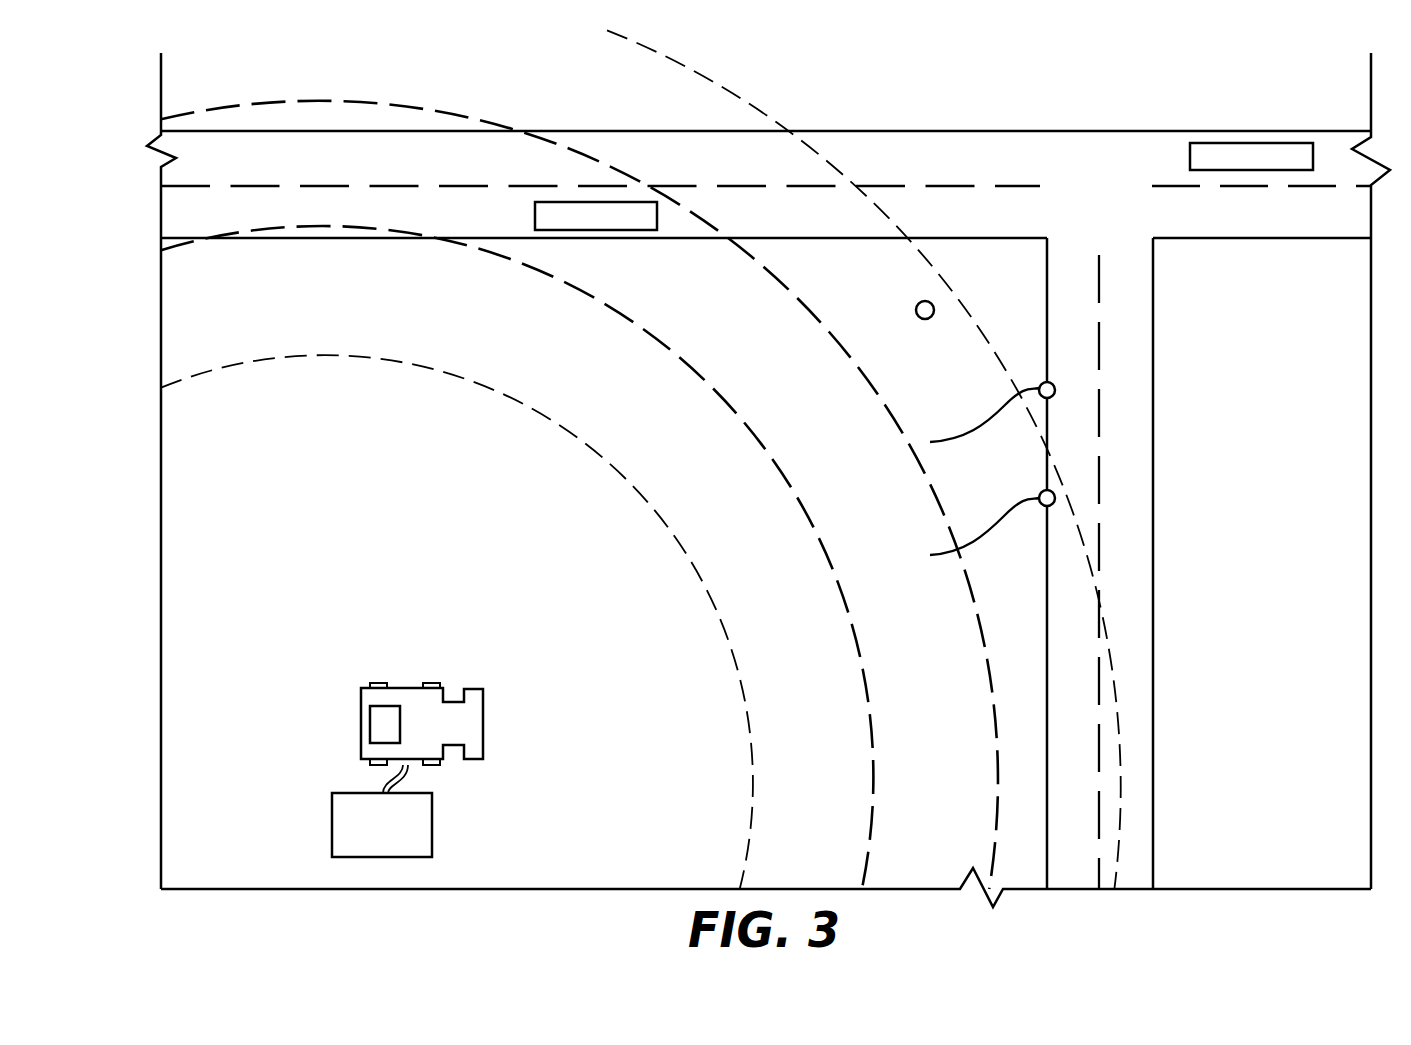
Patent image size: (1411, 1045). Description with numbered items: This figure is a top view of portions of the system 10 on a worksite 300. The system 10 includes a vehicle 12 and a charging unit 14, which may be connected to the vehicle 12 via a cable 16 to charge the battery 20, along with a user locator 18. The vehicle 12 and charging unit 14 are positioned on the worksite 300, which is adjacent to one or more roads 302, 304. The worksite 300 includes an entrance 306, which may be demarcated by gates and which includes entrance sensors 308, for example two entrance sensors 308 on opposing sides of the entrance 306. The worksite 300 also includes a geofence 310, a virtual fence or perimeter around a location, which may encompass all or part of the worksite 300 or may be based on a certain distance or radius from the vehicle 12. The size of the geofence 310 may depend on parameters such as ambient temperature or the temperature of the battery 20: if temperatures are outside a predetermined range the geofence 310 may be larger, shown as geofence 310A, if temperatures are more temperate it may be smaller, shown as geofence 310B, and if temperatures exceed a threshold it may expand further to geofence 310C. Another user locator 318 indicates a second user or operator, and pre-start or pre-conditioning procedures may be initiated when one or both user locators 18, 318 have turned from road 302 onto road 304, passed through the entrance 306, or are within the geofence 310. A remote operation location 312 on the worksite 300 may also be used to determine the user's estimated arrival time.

The system 10 is at (357, 660).
The vehicle 12 is at (414, 691).
The charging unit 14 is at (432, 822).
The cable 16 is at (378, 774).
The user locator 18 is at (640, 230).
The battery 20 is at (370, 727).
The worksite 300 is at (768, 480).
The road 302 is at (855, 131).
The road 304 is at (1137, 305).
The entrance 306 is at (972, 452).
The entrance sensors 308 is at (1052, 383).
The geofence 310 is at (700, 377).
The geofence 310A is at (833, 337).
The geofence 310B is at (580, 440).
The geofence 310C is at (958, 298).
The remote operation location 312 is at (925, 319).
The user locator 318 is at (1285, 143).